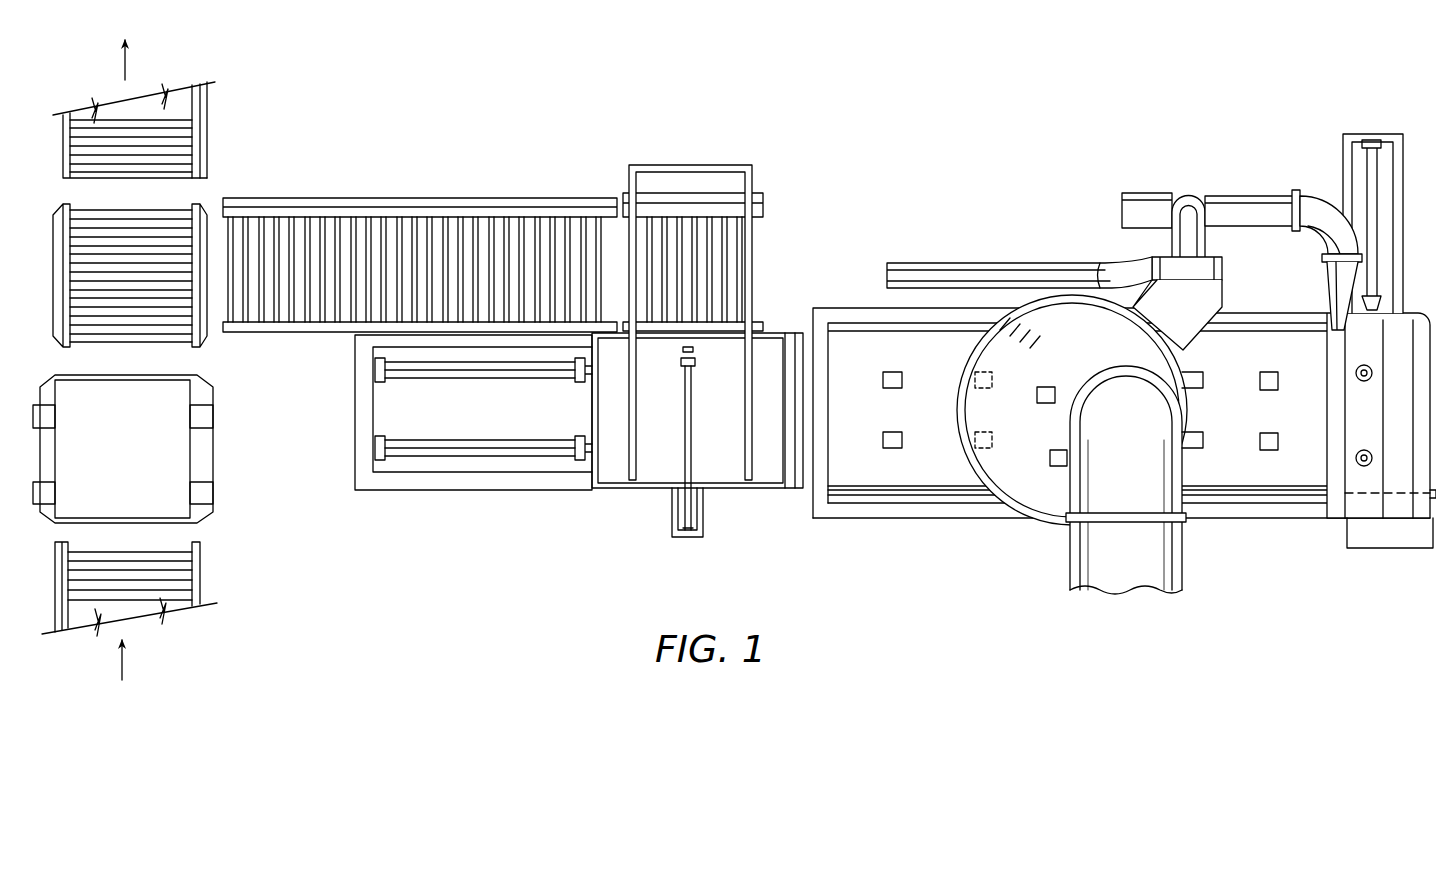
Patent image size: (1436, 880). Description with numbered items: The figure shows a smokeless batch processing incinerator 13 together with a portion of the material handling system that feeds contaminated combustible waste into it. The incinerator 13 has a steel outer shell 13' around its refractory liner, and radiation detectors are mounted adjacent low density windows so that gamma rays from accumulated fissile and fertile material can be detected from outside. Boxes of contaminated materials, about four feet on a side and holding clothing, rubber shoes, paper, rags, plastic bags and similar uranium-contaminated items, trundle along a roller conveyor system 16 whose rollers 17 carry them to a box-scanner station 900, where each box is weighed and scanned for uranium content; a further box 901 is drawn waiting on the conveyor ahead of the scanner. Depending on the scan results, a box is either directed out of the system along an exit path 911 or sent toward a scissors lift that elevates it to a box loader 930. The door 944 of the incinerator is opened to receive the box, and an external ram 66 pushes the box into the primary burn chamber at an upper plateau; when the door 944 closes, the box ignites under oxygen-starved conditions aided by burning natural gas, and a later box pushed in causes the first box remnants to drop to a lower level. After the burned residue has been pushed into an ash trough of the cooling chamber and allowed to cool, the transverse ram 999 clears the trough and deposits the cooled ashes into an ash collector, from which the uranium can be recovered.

The exit path 911 is at (136, 109).
The slat container 901 is at (201, 191).
The box-scanner station 900 is at (148, 457).
The rollers 17 is at (305, 302).
The conveyor system 16 is at (495, 133).
The external ram 66 is at (546, 370).
The door 944 is at (802, 498).
The box loader 930 is at (788, 192).
The smokeless batch processing incinerator 13 is at (1121, 435).
The outer shell 13' is at (1077, 524).
The transverse ram 999 is at (1367, 176).